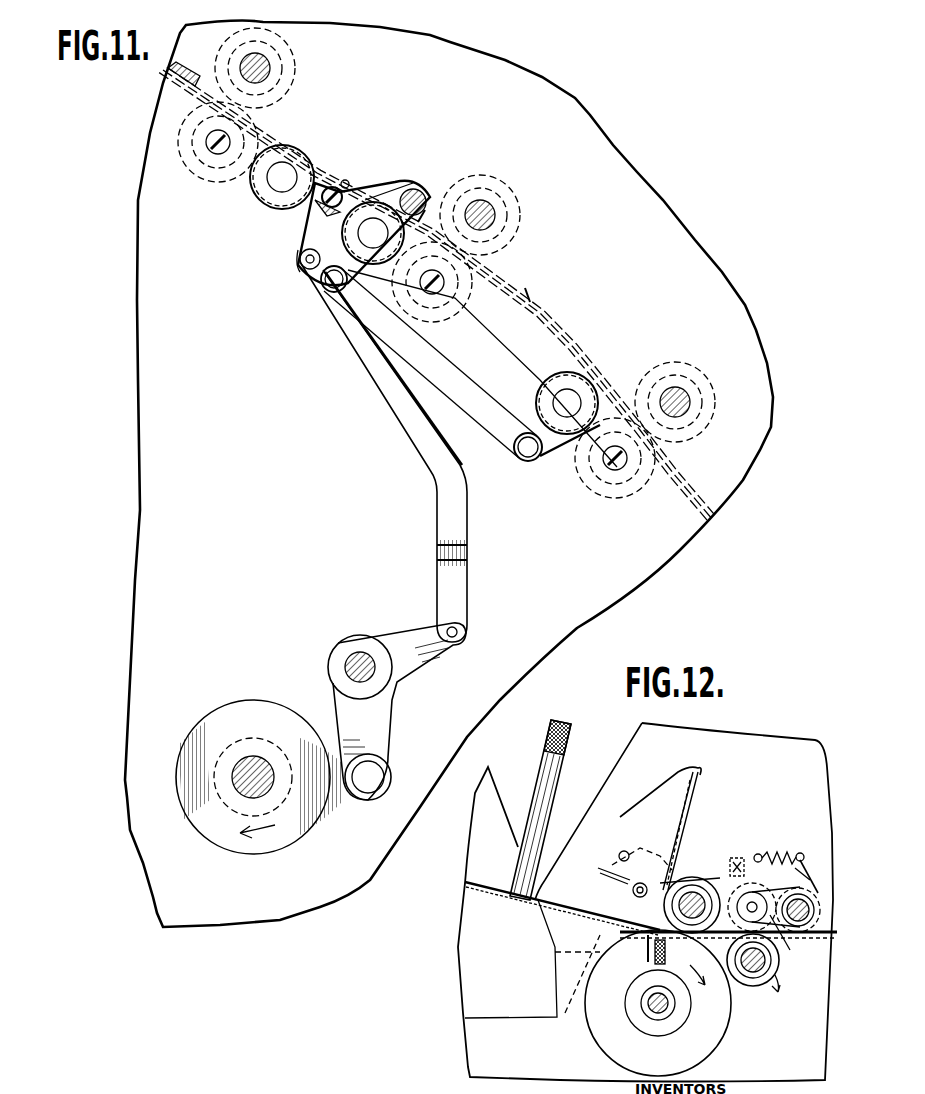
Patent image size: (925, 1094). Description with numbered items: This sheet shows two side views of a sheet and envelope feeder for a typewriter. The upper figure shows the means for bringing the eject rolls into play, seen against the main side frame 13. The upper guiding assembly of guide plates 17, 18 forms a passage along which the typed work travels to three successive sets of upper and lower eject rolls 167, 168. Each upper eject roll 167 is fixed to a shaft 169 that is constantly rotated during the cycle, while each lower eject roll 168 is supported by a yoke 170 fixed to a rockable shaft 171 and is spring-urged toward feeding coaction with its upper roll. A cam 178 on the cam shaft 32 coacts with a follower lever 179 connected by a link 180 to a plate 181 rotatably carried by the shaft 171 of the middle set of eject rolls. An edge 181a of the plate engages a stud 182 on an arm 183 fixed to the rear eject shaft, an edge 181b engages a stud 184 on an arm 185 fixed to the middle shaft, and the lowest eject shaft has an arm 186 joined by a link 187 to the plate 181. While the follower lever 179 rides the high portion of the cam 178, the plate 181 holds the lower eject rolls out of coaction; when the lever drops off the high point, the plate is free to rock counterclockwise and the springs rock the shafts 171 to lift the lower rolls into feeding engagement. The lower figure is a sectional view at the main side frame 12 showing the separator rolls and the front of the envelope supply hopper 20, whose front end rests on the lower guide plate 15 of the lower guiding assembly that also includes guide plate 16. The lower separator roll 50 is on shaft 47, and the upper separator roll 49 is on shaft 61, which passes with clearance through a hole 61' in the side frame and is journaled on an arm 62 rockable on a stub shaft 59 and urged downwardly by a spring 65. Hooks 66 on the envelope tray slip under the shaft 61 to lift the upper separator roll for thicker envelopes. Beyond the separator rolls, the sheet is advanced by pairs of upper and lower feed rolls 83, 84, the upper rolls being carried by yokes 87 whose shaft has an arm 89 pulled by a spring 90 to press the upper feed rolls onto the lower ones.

In FIG. 11, the main side frame 13 is at (655, 560).
In FIG. 11, the guide plate 17 is at (540, 312).
In FIG. 11, the guide plate 18 is at (517, 305).
In FIG. 11, the upper eject roll 167 is at (292, 58).
In FIG. 11, the lower eject roll 168 is at (180, 150).
In FIG. 11, the shaft 169 is at (488, 210).
In FIG. 11, the yoke 170 is at (218, 145).
In FIG. 11, the shaft 171 is at (282, 177).
In FIG. 11, the cam 178 is at (295, 830).
In FIG. 11, the follower lever 179 is at (380, 722).
In FIG. 11, the link 180 is at (370, 360).
In FIG. 11, the plate 181 is at (320, 235).
In FIG. 11, the edge 181a is at (320, 214).
In FIG. 11, the edge 181b is at (418, 188).
In FIG. 11, the stud 182 is at (345, 184).
In FIG. 11, the arm 183 is at (318, 180).
In FIG. 11, the stud 184 is at (425, 208).
In FIG. 11, the arm 185 is at (408, 190).
In FIG. 11, the arm 186 is at (522, 432).
In FIG. 11, the link 187 is at (445, 365).
In FIG. 11, the cam shaft 32 is at (256, 775).
In FIG. 12, the main side frame 12 is at (765, 750).
In FIG. 12, the guide plate 15 is at (815, 878).
In FIG. 12, the guide plate 16 is at (820, 980).
In FIG. 12, the supply hopper 20 is at (678, 803).
In FIG. 12, the shaft 47 is at (655, 1010).
In FIG. 12, the upper separator roll 49 is at (735, 868).
In FIG. 12, the lower separator roll 50 is at (705, 1045).
In FIG. 12, the stub shaft 59 is at (574, 989).
In FIG. 12, the shaft 61 is at (692, 889).
In FIG. 12, the hole 61' is at (700, 851).
In FIG. 12, the arm 62 is at (620, 888).
In FIG. 12, the spring 65 is at (654, 955).
In FIG. 12, the hook 66 is at (672, 840).
In FIG. 12, the upper feed roll 83 is at (770, 888).
In FIG. 12, the lower feed roll 84 is at (752, 985).
In FIG. 12, the yoke 87 is at (791, 941).
In FIG. 12, the arm 89 is at (790, 873).
In FIG. 12, the spring 90 is at (770, 855).